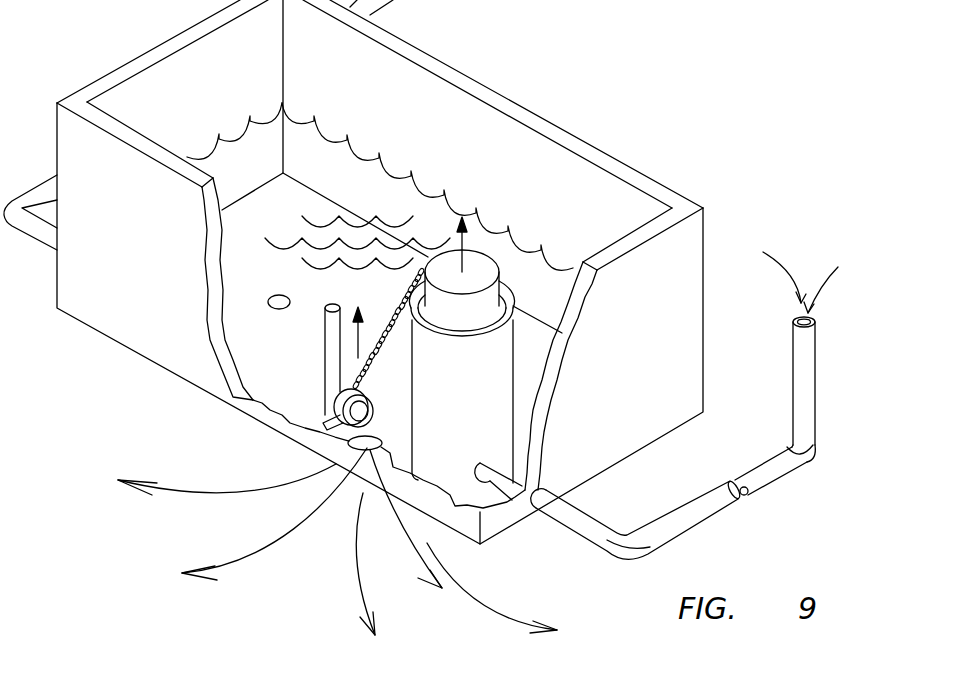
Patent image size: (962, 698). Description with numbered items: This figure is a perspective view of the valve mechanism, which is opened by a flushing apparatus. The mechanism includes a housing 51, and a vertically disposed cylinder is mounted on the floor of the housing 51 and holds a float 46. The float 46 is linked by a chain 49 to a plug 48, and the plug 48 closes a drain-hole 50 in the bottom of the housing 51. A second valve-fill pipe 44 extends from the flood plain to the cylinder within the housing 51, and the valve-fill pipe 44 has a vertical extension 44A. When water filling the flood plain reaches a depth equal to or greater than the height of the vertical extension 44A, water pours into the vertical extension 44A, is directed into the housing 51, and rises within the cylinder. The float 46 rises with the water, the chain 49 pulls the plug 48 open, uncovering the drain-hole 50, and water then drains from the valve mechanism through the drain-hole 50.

The housing 51 is at (453, 67).
The float 46 is at (483, 263).
The chain 49 is at (350, 367).
The plug 48 is at (338, 406).
The drain-hole 50 is at (348, 438).
The valve-fill pipe 44 is at (782, 468).
The vertical extension 44A is at (800, 360).